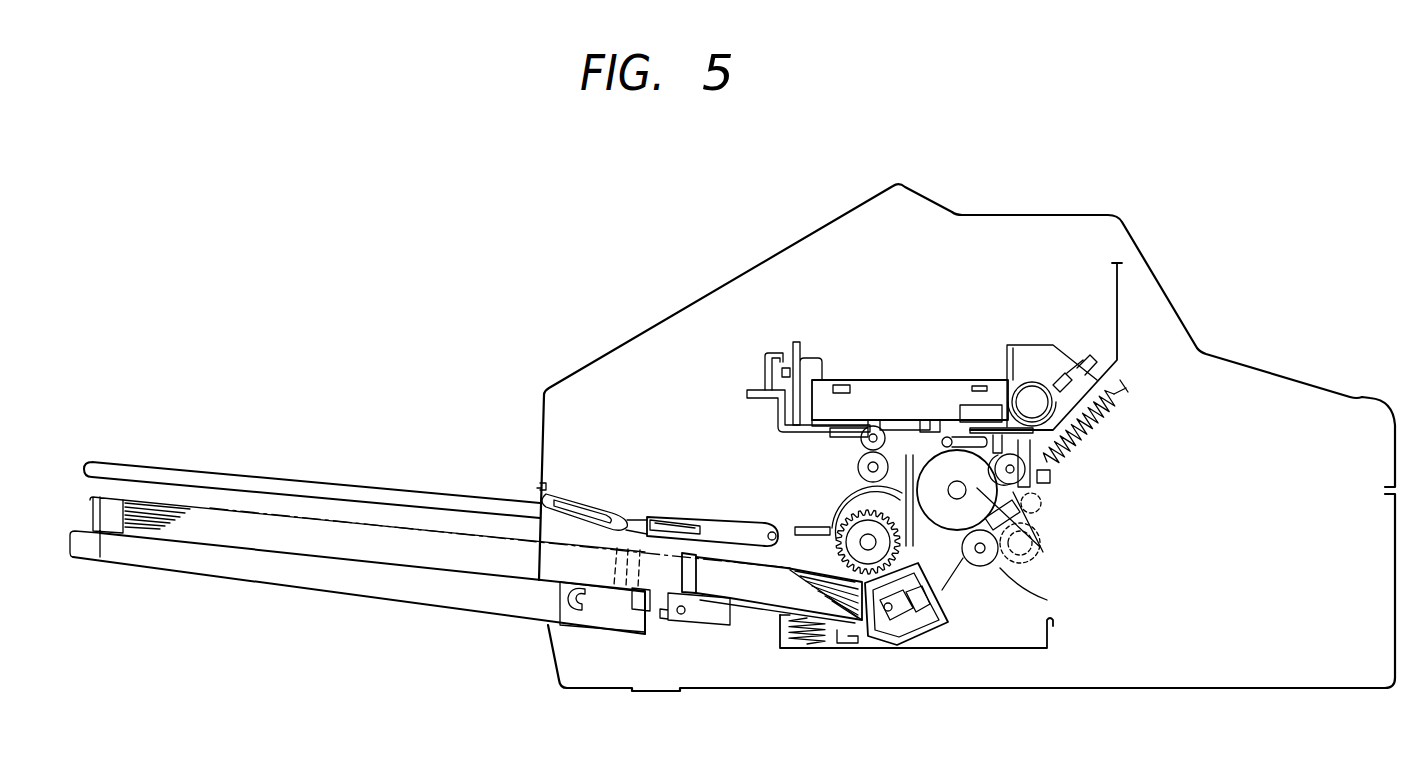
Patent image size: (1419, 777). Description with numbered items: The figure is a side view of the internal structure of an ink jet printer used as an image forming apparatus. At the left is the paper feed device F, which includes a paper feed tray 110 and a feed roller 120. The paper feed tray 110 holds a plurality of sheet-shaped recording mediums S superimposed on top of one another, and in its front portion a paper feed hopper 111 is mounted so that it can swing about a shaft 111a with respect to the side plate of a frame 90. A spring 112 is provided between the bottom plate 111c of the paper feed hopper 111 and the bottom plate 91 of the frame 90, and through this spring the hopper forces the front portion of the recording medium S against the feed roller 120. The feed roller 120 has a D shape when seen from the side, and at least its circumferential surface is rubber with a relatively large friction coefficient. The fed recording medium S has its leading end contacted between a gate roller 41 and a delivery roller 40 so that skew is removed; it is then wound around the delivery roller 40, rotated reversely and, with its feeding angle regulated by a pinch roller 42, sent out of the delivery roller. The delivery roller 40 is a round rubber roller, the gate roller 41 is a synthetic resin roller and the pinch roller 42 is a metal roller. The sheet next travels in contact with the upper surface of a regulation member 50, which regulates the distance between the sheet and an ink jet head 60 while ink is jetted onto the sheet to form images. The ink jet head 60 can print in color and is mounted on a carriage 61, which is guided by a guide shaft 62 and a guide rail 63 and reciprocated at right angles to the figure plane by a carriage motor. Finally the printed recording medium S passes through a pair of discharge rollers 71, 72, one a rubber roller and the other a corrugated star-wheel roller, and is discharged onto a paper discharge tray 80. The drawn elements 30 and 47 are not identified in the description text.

The paper feed tray 110 is at (380, 598).
The paper discharge tray 80 is at (396, 472).
The recording medium S is at (250, 516).
The paper feed hopper 111 is at (730, 653).
The shaft 111a is at (675, 612).
The bottom plate of the paper feed hopper 111c is at (748, 640).
The spring 112 is at (805, 648).
The bottom plate of the frame 91 is at (845, 650).
The paper feed device F is at (774, 643).
The frame member 30 is at (905, 632).
The feed roller 120 is at (846, 531).
The delivery roller 40 is at (985, 493).
The gate roller 41 is at (1002, 558).
The pinch roller 42 is at (945, 437).
The lever 47 is at (945, 568).
The regulation member 50 is at (900, 436).
The ink jet head 60 is at (925, 425).
The carriage 61 is at (866, 388).
The guide shaft 62 is at (1032, 402).
The guide rail 63 is at (755, 398).
The discharge roller 71 is at (858, 470).
The discharge roller 72 is at (860, 440).
The frame 90 is at (1115, 283).